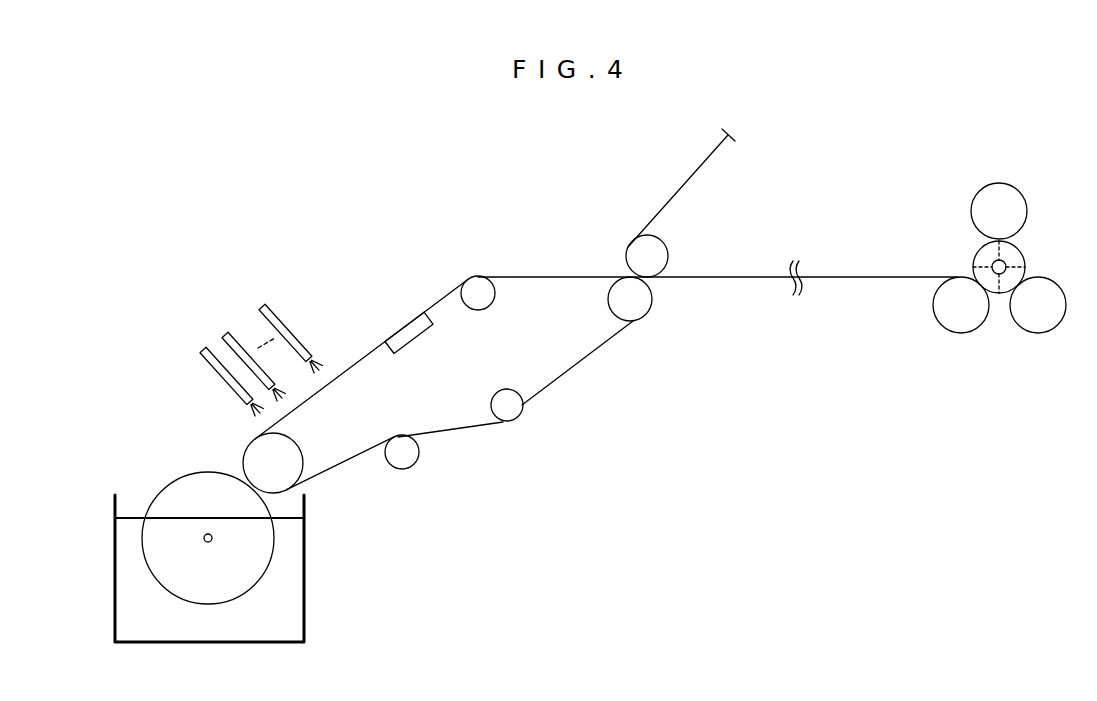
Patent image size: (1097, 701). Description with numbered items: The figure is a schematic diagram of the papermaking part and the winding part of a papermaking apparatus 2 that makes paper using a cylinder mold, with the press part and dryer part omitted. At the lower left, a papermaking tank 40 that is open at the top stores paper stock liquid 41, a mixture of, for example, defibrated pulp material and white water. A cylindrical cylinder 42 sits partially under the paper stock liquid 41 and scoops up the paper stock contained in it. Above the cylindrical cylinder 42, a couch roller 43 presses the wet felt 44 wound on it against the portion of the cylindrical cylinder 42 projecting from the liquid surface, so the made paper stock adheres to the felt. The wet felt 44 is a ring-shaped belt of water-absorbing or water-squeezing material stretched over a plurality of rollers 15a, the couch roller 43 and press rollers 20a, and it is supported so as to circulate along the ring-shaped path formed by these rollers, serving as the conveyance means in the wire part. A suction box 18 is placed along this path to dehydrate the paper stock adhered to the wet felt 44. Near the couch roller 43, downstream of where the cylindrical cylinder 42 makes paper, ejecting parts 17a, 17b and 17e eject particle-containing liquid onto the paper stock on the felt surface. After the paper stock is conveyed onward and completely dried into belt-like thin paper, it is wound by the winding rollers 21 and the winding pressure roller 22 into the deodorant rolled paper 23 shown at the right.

The papermaking apparatus 2 is at (420, 131).
The rollers 15a is at (478, 310).
The ejecting part 17a is at (213, 363).
The ejecting part 17b is at (245, 335).
The ejecting part 17e is at (283, 327).
The suction box 18 is at (413, 343).
The press rollers 20a is at (637, 303).
The winding rollers 21 is at (958, 335).
The winding pressure roller 22 is at (1005, 185).
The deodorant rolled paper 23 is at (1023, 260).
The papermaking tank 40 is at (113, 585).
The paper stock liquid 41 is at (183, 614).
The cylindrical cylinder 42 is at (167, 483).
The couch roller 43 is at (303, 452).
The wet felt 44 is at (360, 358).